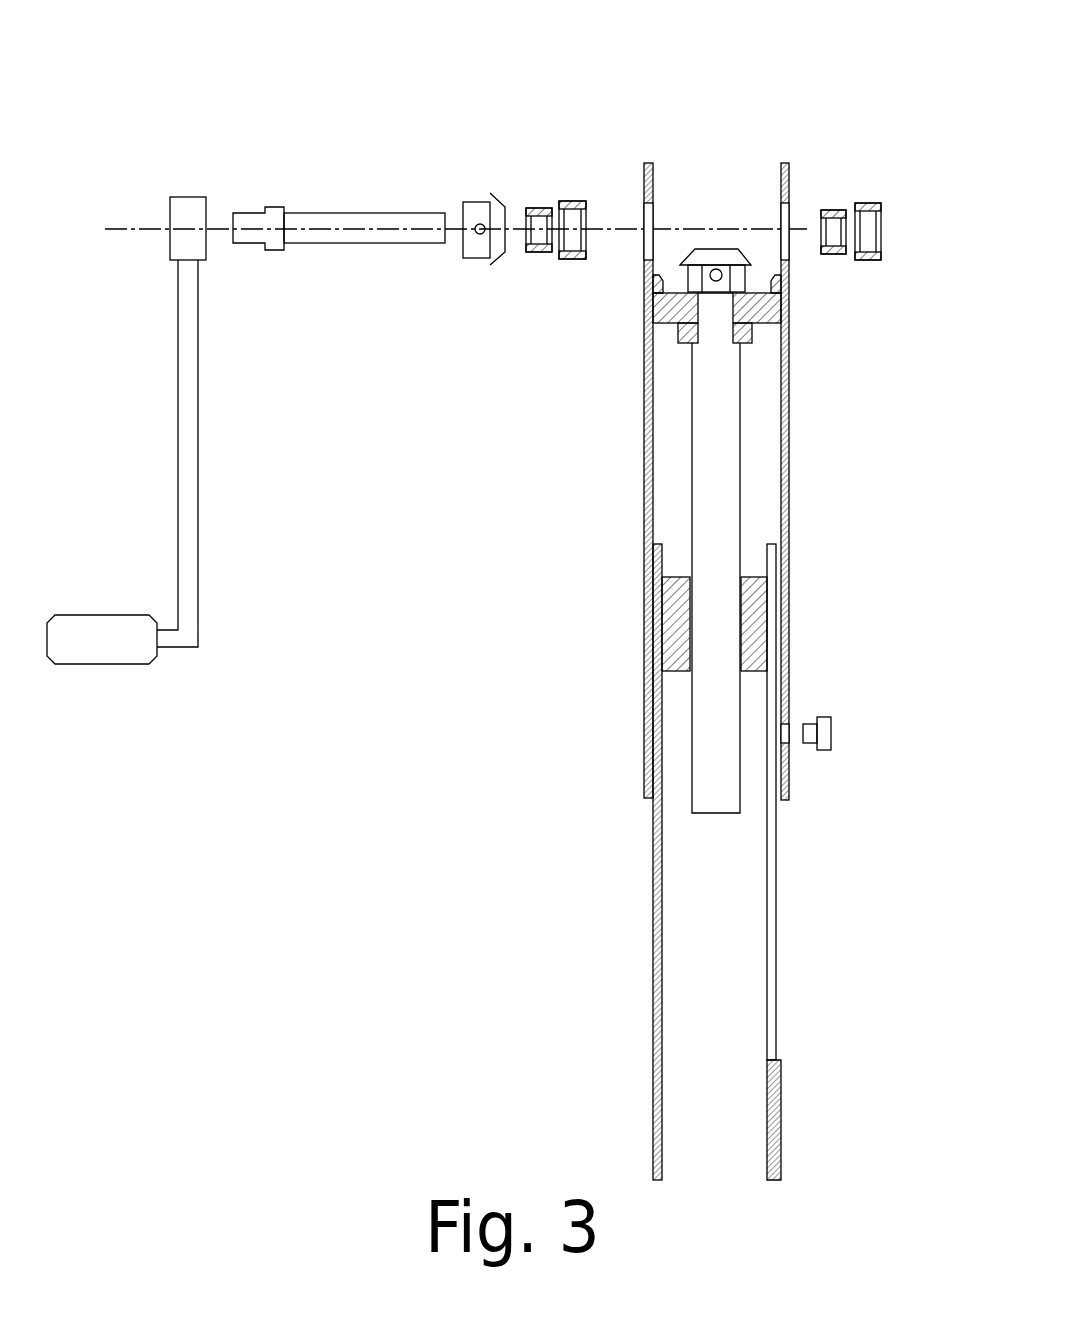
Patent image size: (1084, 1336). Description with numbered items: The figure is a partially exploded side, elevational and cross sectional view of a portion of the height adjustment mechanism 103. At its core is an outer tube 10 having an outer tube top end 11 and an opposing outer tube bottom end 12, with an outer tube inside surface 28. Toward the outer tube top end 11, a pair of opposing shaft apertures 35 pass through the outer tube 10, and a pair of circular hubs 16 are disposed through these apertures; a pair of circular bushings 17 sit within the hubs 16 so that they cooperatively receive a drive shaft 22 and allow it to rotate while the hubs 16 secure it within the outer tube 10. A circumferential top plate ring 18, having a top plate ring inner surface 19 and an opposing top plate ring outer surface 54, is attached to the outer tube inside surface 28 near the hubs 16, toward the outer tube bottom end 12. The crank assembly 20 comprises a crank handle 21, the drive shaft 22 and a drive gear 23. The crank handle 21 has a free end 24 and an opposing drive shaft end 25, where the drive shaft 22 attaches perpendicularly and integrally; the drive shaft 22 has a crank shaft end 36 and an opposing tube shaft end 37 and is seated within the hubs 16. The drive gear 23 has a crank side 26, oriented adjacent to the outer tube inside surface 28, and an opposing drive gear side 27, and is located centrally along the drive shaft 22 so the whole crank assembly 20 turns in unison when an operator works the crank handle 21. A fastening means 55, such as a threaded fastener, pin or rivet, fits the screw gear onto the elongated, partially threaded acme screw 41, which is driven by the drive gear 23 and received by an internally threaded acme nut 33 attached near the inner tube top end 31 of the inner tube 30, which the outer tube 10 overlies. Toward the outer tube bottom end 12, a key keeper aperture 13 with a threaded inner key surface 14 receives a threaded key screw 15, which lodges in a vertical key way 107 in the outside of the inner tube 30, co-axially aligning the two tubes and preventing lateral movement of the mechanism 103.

The outer tube 10 is at (797, 470).
The outer tube top end 11 is at (665, 165).
The outer tube bottom end 12 is at (648, 800).
The key keeper aperture 13 is at (788, 744).
The threaded inner key surface 14 is at (788, 724).
The key screw 15 is at (832, 734).
The circular hubs 16 is at (572, 201).
The circular bushings 17 is at (538, 208).
The top plate ring 18 is at (653, 290).
The top plate ring inner surface 19 is at (652, 340).
The crank assembly 20 is at (228, 320).
The crank handle 21 is at (200, 440).
The drive shaft 22 is at (336, 213).
The drive gear 23 is at (463, 204).
The free end 24 is at (125, 666).
The drive shaft end 25 is at (188, 197).
The crank side 26 is at (463, 258).
The drive gear side 27 is at (492, 193).
The outer tube inside surface 28 is at (653, 413).
The inner tube 30 is at (648, 955).
The inner tube top end 31 is at (675, 550).
The acme nut 33 is at (763, 640).
The shaft apertures 35 is at (648, 215).
The crank shaft end 36 is at (233, 224).
The tube shaft end 37 is at (445, 213).
The acme screw 41 is at (708, 725).
The top plate ring outer surface 54 is at (652, 270).
The fastening means 55 is at (479, 222).
The height adjustment mechanism 103 is at (538, 745).
The key way 107 is at (784, 1008).